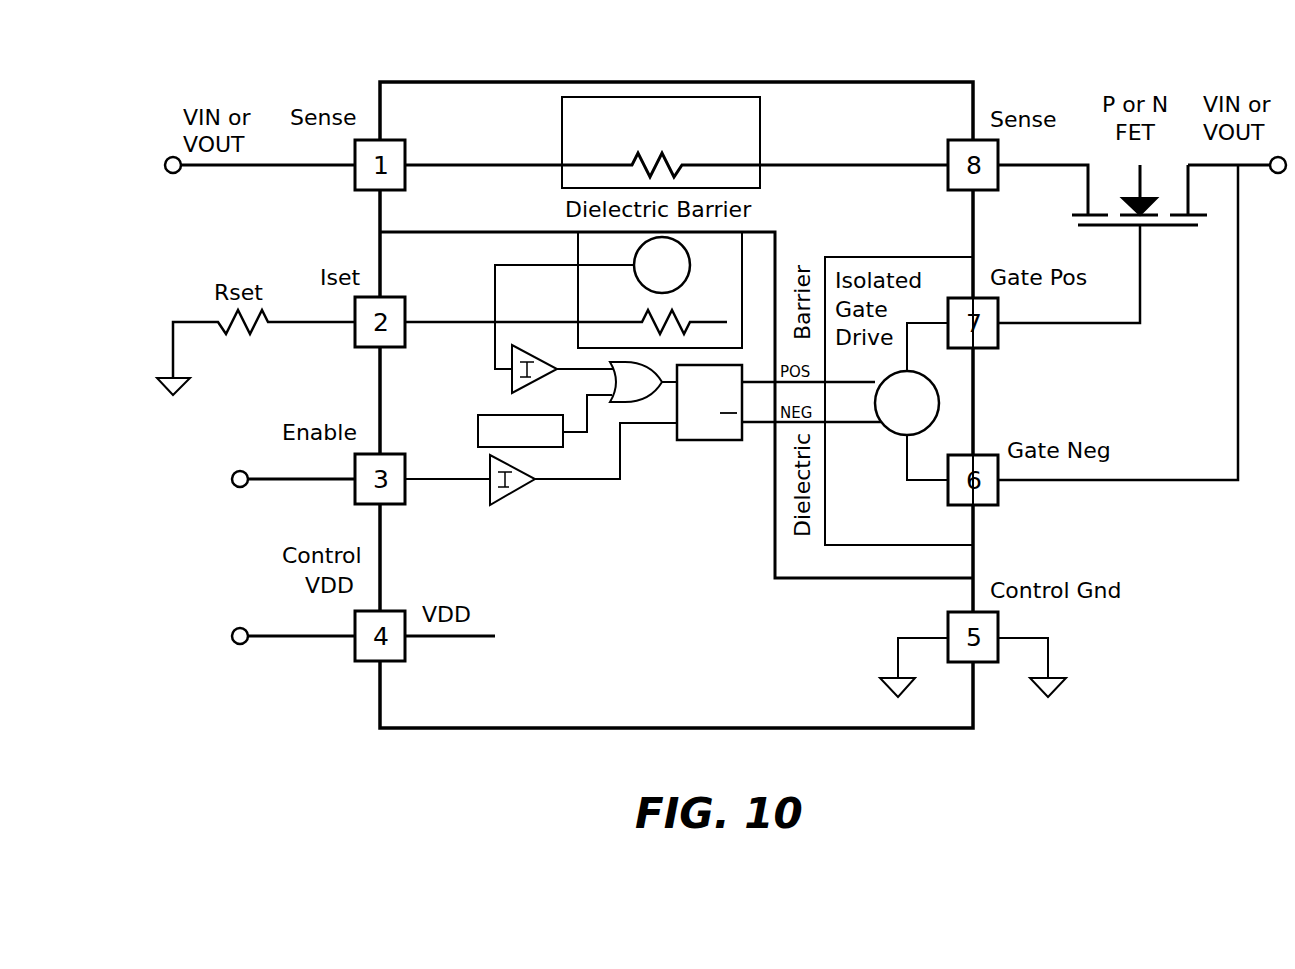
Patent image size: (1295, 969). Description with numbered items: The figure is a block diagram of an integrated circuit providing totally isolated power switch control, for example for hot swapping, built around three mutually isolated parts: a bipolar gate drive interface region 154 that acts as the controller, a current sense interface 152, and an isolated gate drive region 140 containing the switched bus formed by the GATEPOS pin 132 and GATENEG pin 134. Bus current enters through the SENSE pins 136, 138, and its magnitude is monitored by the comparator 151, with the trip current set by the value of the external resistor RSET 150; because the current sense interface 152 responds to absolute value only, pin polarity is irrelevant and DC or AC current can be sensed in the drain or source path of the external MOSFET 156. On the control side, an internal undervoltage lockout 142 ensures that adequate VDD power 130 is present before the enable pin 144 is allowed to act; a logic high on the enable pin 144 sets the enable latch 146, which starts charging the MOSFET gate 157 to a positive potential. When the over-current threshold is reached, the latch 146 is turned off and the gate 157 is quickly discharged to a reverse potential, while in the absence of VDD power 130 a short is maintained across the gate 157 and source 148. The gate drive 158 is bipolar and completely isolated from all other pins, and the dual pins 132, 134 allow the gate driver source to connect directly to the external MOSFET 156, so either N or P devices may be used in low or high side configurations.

The VDD power 130 is at (278, 640).
The GATEPOS pin 132 is at (1105, 325).
The GATENEG pin 134 is at (1128, 478).
The SENSE pin 136 is at (270, 172).
The SENSE pin 138 is at (1075, 162).
The isolated gate drive region 140 is at (923, 522).
The undervoltage lockout 142 is at (478, 430).
The enable pin 144 is at (278, 482).
The enable latch 146 is at (713, 443).
The source 148 is at (1278, 155).
The resistor RSET 150 is at (260, 336).
The comparator 151 is at (493, 278).
The current sense interface 152 is at (742, 148).
The bipolar gate drive interface region 154 is at (445, 695).
The external MOSFET 156 is at (1152, 237).
The MOSFET gate 157 is at (1123, 226).
The gate drive 158 is at (923, 398).